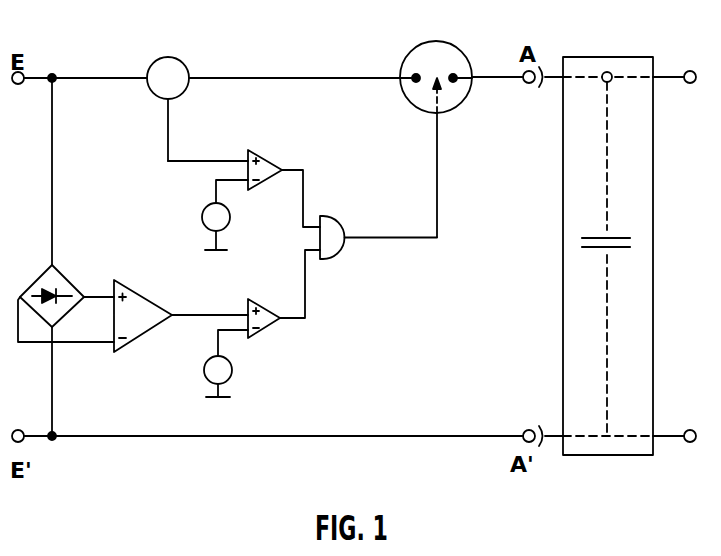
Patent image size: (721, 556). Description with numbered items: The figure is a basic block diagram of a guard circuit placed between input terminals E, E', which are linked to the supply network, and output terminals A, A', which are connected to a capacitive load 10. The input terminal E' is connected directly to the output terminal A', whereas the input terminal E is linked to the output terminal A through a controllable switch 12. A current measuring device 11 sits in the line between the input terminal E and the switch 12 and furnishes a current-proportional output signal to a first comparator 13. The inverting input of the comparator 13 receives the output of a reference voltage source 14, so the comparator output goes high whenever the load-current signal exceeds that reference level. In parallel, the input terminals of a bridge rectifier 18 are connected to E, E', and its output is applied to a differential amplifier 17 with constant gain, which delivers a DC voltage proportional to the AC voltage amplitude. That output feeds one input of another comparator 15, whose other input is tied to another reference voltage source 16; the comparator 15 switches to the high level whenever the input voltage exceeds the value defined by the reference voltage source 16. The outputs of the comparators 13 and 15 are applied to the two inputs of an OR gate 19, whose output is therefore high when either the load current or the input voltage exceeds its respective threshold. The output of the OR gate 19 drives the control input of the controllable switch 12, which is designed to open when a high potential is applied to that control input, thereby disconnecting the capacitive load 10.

The capacitive load 10 is at (576, 183).
The current measuring device 11 is at (182, 58).
The controllable switch 12 is at (412, 50).
The first comparator 13 is at (263, 158).
The reference voltage source 14 is at (230, 220).
The comparator 15 is at (262, 307).
The reference voltage source 16 is at (232, 370).
The differential amplifier 17 is at (145, 298).
The bridge rectifier 18 is at (67, 279).
The OR gate 19 is at (338, 251).